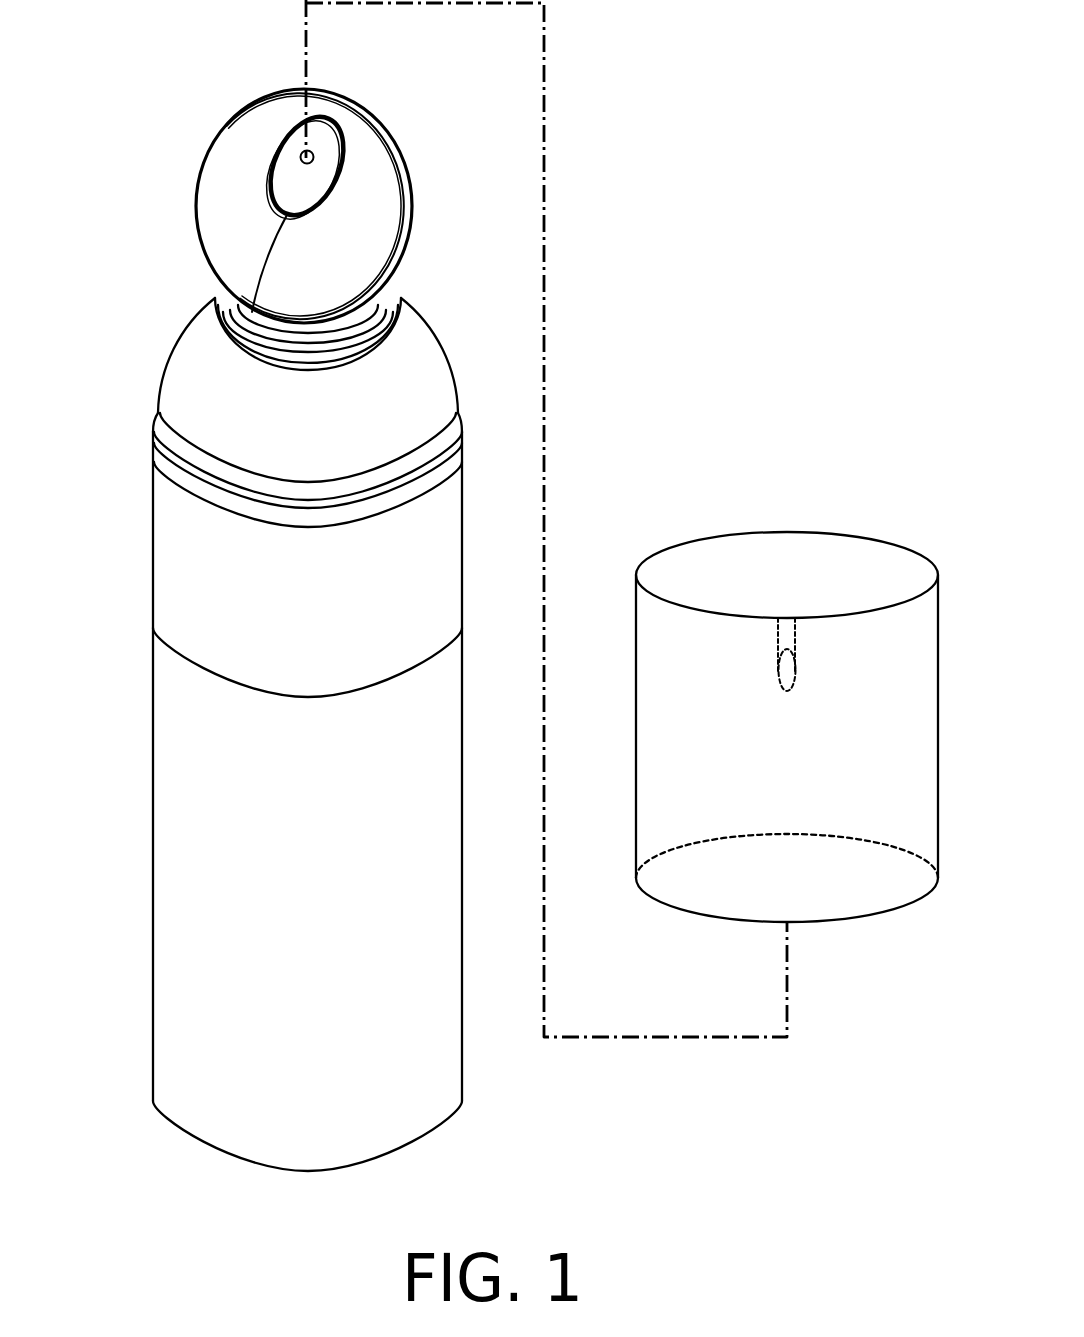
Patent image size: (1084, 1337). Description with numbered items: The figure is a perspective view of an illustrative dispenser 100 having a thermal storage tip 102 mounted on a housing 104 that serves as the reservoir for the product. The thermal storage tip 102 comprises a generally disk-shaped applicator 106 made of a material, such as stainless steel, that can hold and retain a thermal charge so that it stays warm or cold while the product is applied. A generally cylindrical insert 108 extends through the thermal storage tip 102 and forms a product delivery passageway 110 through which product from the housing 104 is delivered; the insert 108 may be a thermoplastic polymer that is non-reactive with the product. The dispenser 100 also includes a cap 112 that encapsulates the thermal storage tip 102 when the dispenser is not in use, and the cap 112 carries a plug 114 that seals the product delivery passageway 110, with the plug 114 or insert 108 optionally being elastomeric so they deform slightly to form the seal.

The dispenser 100 is at (172, 58).
The thermal storage tip 102 is at (204, 144).
The housing 104 is at (402, 1085).
The applicator 106 is at (215, 242).
The insert 108 is at (302, 182).
The product delivery passageway 110 is at (313, 153).
The cap 112 is at (806, 478).
The plug 114 is at (775, 672).